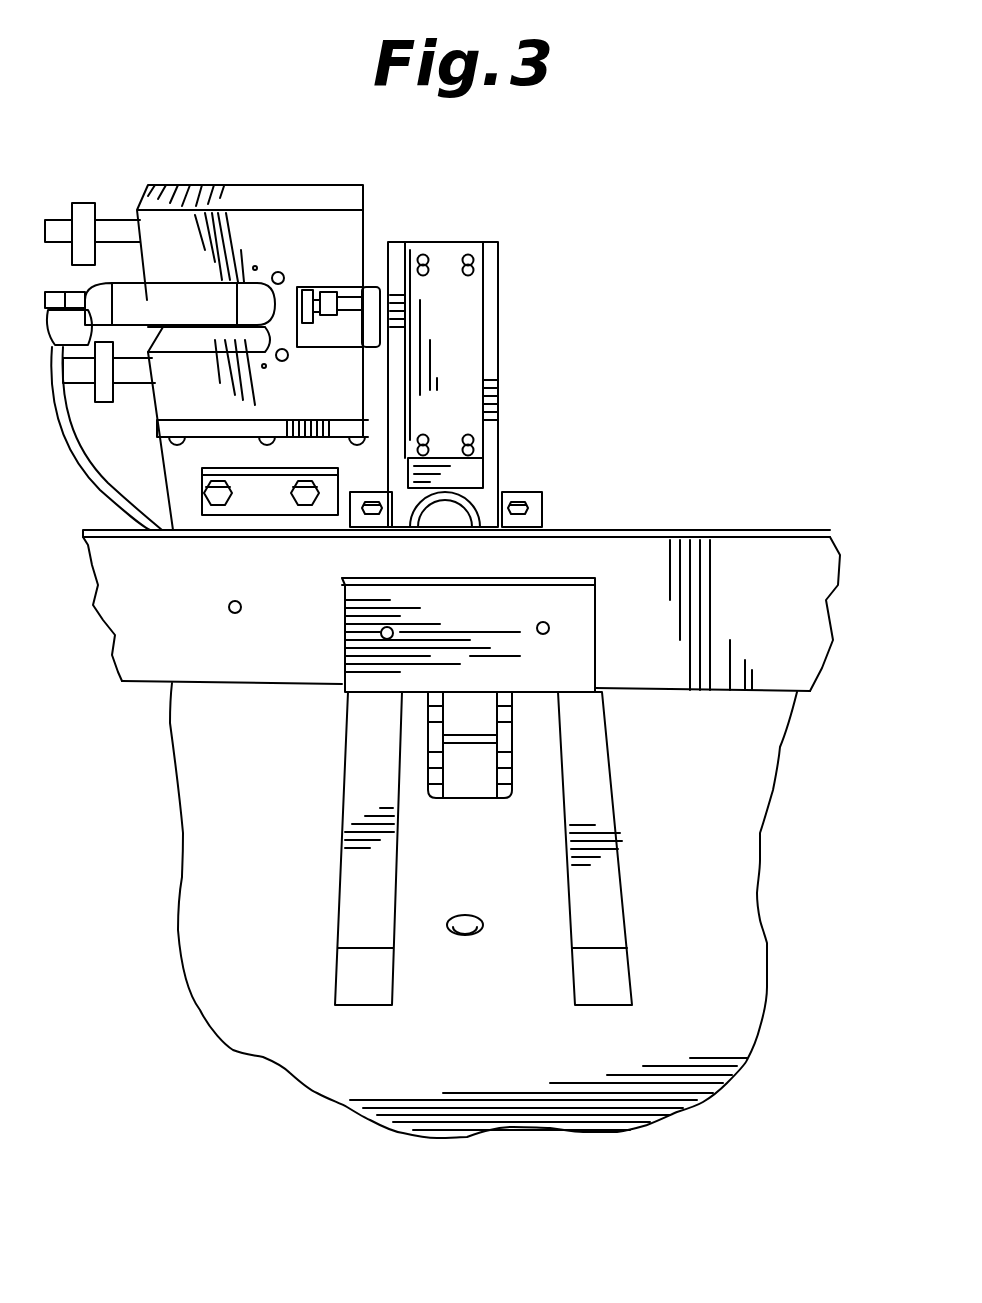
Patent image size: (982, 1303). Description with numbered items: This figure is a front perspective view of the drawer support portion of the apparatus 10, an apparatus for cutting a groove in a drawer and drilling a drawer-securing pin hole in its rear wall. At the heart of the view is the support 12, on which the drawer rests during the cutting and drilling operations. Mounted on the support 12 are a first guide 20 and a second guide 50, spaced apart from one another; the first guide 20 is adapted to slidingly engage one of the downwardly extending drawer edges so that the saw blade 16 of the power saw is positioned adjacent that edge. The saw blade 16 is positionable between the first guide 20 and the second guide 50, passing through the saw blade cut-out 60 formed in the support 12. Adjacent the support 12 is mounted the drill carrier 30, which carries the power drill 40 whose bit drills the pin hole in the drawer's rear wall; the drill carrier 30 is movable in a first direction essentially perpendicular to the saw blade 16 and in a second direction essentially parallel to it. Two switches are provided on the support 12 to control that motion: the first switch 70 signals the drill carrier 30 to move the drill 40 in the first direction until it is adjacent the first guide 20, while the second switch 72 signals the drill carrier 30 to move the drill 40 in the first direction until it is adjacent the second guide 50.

The apparatus 10 is at (680, 297).
The support 12 is at (728, 935).
The saw blade 16 is at (508, 792).
The first guide 20 is at (600, 808).
The drill carrier 30 is at (493, 312).
The power drill 40 is at (483, 497).
The second guide 50 is at (368, 900).
The saw blade cut-out 60 is at (512, 730).
The first switch 70 is at (730, 608).
The second switch 72 is at (232, 613).